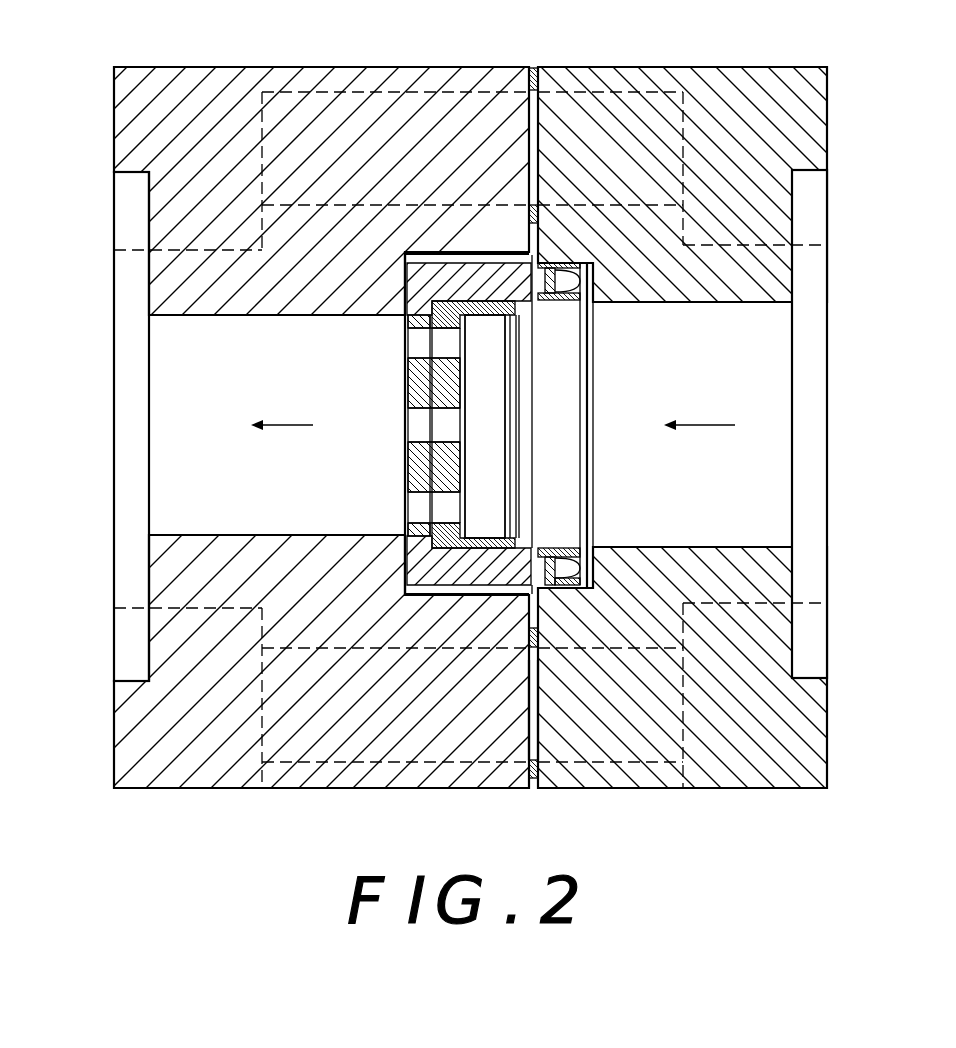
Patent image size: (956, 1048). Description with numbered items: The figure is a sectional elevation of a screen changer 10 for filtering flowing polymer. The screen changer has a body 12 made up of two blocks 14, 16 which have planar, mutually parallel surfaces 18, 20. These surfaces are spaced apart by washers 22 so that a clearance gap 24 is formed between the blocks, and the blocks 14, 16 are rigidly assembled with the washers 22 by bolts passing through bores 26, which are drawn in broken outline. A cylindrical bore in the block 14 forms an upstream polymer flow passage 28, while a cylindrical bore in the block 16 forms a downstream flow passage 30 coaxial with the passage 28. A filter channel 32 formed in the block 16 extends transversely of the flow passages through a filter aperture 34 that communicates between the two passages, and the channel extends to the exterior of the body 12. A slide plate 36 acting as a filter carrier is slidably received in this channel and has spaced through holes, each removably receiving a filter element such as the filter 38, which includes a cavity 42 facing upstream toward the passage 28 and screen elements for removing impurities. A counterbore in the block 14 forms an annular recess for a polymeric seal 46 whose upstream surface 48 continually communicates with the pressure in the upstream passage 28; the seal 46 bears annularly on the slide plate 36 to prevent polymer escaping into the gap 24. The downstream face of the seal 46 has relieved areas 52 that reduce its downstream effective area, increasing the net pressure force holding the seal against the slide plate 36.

The screen changer 10 is at (85, 178).
The body 12 is at (178, 789).
The block 14 is at (667, 789).
The block 16 is at (360, 789).
The planar surface 18 is at (531, 745).
The planar surface 20 is at (543, 717).
The washers 22 is at (533, 67).
The clearance gap 24 is at (534, 122).
The bores 26 is at (260, 775).
The upstream polymer flow passage 28 is at (738, 383).
The downstream flow passage 30 is at (285, 397).
The filter channel 32 is at (423, 592).
The filter aperture 34 is at (543, 449).
The slide plate 36 is at (410, 282).
The filter element 38 is at (484, 538).
The cavity 42 is at (500, 405).
The polymeric seal 46 is at (568, 550).
The upstream surface 48 is at (575, 283).
The relieved areas 52 is at (540, 285).